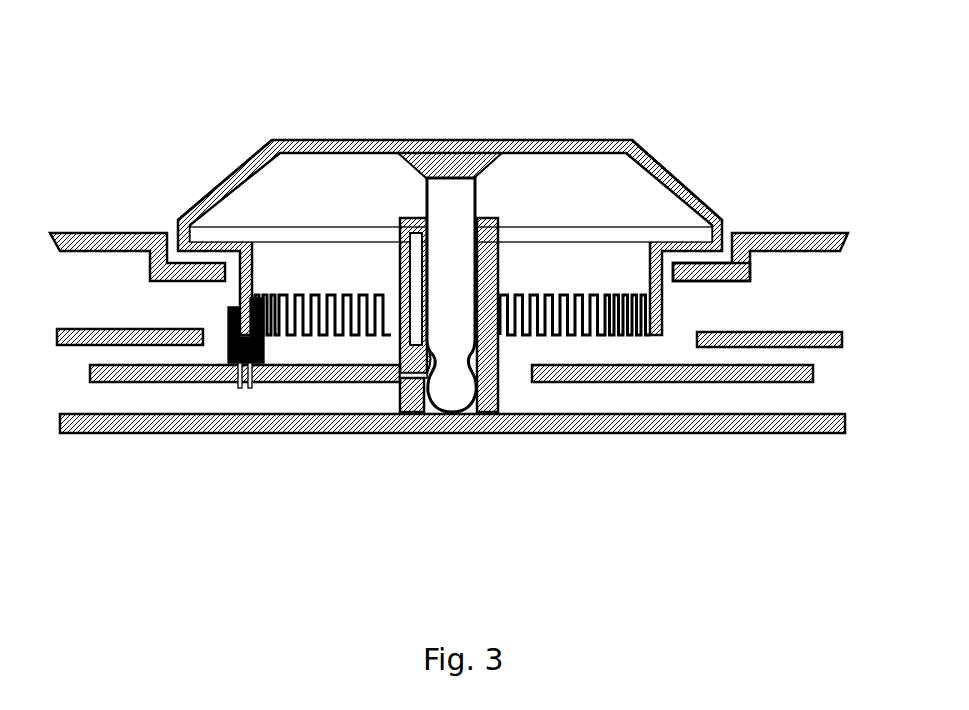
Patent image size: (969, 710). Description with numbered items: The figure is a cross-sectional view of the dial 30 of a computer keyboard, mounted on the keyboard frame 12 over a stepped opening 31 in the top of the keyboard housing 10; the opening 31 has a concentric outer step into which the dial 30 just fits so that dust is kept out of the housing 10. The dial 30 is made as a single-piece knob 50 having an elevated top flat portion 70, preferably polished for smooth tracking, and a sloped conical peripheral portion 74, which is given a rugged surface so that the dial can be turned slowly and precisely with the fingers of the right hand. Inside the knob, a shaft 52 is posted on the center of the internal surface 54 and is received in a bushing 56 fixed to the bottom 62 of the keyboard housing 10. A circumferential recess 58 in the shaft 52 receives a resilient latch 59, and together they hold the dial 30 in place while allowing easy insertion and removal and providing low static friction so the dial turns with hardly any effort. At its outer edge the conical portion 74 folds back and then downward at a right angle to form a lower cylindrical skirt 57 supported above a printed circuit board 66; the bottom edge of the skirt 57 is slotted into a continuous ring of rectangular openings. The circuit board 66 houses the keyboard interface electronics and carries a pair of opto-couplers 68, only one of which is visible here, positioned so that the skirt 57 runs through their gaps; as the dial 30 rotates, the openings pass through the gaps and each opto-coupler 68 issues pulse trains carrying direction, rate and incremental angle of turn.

The keyboard housing 10 is at (185, 463).
The keyboard frame 12 is at (92, 226).
The dial 30 is at (402, 107).
The stepped opening 31 is at (673, 287).
The knob 50 is at (217, 180).
The shaft 52 is at (476, 198).
The internal surface 54 is at (533, 160).
The bushing 56 is at (510, 388).
The lower cylindrical skirt 57 is at (626, 316).
The circumferential recess 58 is at (472, 360).
The resilient latch 59 is at (410, 362).
The bottom of keyboard housing 62 is at (533, 434).
The printed circuit board 66 is at (822, 375).
The opto-coupler 68 is at (223, 335).
The elevated top flat portion 70 is at (305, 133).
The sloped conical peripheral portion 74 is at (690, 187).